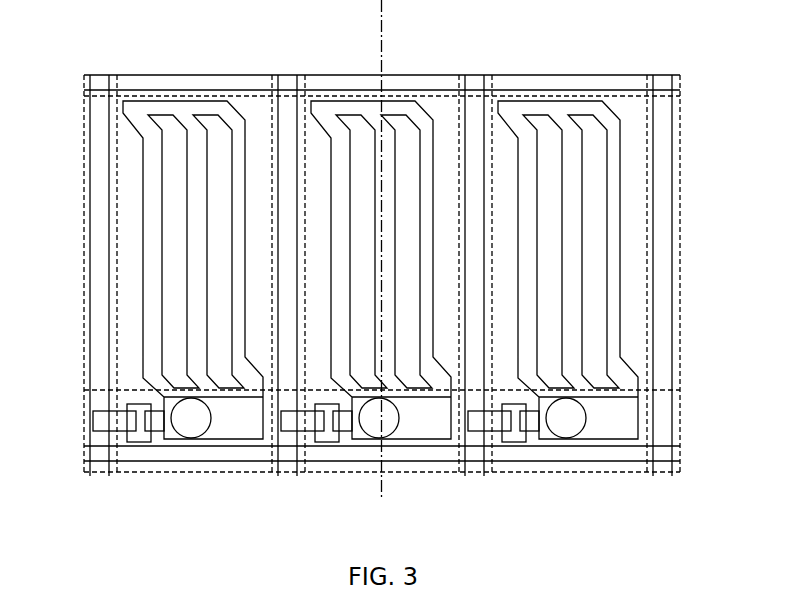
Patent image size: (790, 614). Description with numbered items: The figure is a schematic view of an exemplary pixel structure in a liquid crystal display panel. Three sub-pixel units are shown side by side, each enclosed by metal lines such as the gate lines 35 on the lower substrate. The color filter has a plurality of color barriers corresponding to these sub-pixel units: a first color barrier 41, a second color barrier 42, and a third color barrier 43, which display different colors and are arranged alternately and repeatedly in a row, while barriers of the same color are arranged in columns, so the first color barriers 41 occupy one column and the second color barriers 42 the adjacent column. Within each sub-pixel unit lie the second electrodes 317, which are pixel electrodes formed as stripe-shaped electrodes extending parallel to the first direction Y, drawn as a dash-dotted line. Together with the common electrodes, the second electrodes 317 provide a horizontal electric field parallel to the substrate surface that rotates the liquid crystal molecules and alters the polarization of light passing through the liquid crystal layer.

The gate line 35 is at (100, 162).
The first color barrier 41 is at (145, 229).
The second color barrier 42 is at (447, 105).
The third color barrier 43 is at (637, 107).
The second electrode 317 is at (153, 255).
The first direction Y is at (381, 121).